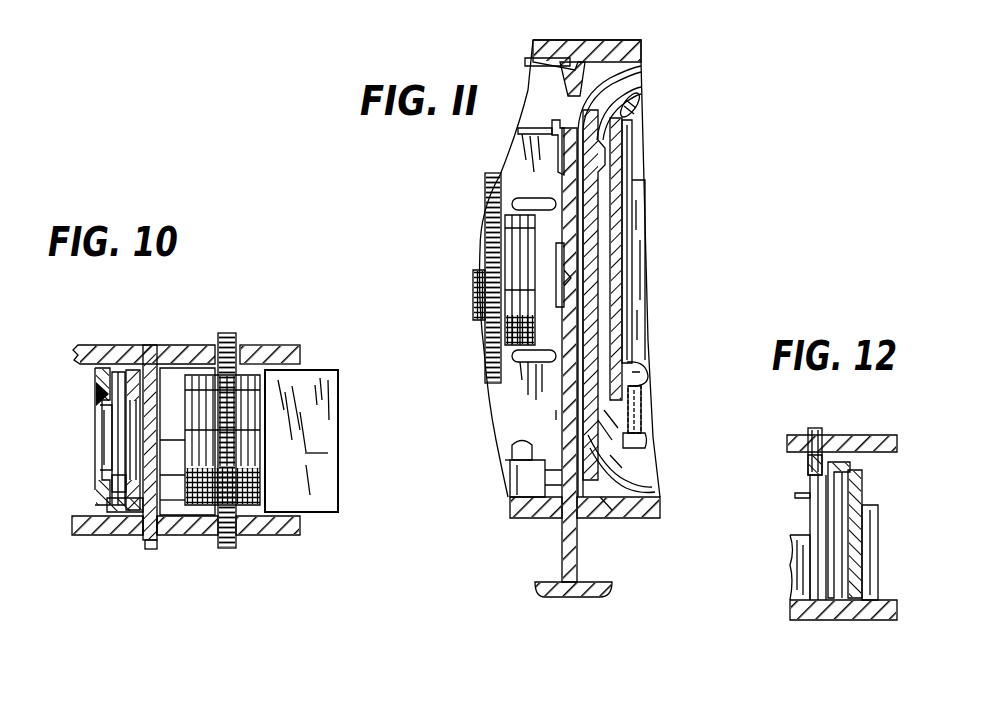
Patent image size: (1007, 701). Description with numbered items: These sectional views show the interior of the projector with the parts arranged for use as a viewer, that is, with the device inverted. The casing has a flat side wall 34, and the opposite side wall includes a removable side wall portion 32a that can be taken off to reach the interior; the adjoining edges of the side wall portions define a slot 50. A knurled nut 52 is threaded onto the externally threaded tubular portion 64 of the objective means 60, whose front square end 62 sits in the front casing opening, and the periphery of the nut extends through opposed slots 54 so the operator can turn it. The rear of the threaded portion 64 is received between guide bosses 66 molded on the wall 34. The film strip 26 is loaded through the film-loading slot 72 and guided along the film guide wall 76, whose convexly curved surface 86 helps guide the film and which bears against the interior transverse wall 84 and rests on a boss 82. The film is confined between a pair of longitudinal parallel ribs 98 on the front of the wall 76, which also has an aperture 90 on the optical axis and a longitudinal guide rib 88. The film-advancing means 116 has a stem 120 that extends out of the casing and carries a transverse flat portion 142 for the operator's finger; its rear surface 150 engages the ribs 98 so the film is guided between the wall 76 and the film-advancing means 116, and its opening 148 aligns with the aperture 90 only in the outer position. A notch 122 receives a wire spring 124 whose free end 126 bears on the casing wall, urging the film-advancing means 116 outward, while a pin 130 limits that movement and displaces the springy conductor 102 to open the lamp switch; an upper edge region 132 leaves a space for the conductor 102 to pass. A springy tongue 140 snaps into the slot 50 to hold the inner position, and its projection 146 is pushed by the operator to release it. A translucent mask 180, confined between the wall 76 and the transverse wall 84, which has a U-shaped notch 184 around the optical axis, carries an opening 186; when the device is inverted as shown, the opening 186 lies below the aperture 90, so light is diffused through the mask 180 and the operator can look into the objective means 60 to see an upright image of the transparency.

In FIG. 10, the film strip 26 is at (126, 450).
In FIG. 11, the film strip 26 is at (655, 486).
In FIG. 12, the film strip 26 is at (830, 518).
In FIG. 10, the removable side wall portion 32a is at (94, 538).
In FIG. 10, the side wall 34 is at (132, 345).
In FIG. 10, the slot 50 is at (170, 540).
In FIG. 10, the knurled nut 52 is at (242, 332).
In FIG. 11, the knurled nut 52 is at (485, 187).
In FIG. 10, the opposed slots 54 is at (260, 349).
In FIG. 10, the objective means 60 is at (340, 490).
In FIG. 10, the front square end 62 is at (261, 441).
In FIG. 11, the externally threaded tubular portion 64 is at (478, 318).
In FIG. 11, the guide bosses 66 is at (535, 200).
In FIG. 11, the film-loading slot 72 is at (648, 510).
In FIG. 11, the film guide wall 76 is at (590, 196).
In FIG. 11, the boss 82 is at (645, 408).
In FIG. 10, the interior transverse wall 84 is at (95, 395).
In FIG. 11, the convexly curved surface 86 is at (645, 442).
In FIG. 10, the longitudinal guide rib 88 is at (107, 509).
In FIG. 12, the longitudinal guide rib 88 is at (872, 435).
In FIG. 10, the aperture 90 is at (112, 418).
In FIG. 11, the aperture 90 is at (600, 252).
In FIG. 12, the aperture 90 is at (845, 510).
In FIG. 10, the longitudinal parallel ribs 98 is at (187, 441).
In FIG. 11, the electrically conductive metal strip 102 is at (597, 518).
In FIG. 10, the film-advancing means 116 is at (166, 372).
In FIG. 11, the film-advancing means 116 is at (579, 563).
In FIG. 11, the elongated narrow portion 120 is at (562, 550).
In FIG. 11, the notch 122 is at (557, 121).
In FIG. 11, the wire spring 124 is at (518, 130).
In FIG. 11, the free end 126 is at (533, 70).
In FIG. 11, the pin 130 is at (510, 487).
In FIG. 11, the upper edge region 132 is at (515, 456).
In FIG. 10, the springy tongue 140 is at (173, 492).
In FIG. 12, the springy tongue 140 is at (808, 464).
In FIG. 11, the transverse flat portion 142 is at (608, 593).
In FIG. 10, the projection 146 is at (155, 549).
In FIG. 12, the projection 146 is at (818, 430).
In FIG. 11, the opening 148 is at (557, 264).
In FIG. 12, the opening 148 is at (805, 560).
In FIG. 10, the rear surface 150 is at (173, 457).
In FIG. 11, the rear surface 150 is at (562, 415).
In FIG. 10, the translucent mask 180 is at (112, 489).
In FIG. 11, the translucent mask 180 is at (626, 268).
In FIG. 10, the U-shaped notch 184 is at (100, 438).
In FIG. 12, the U-shaped notch 184 is at (878, 548).
In FIG. 11, the opening 186 is at (650, 374).